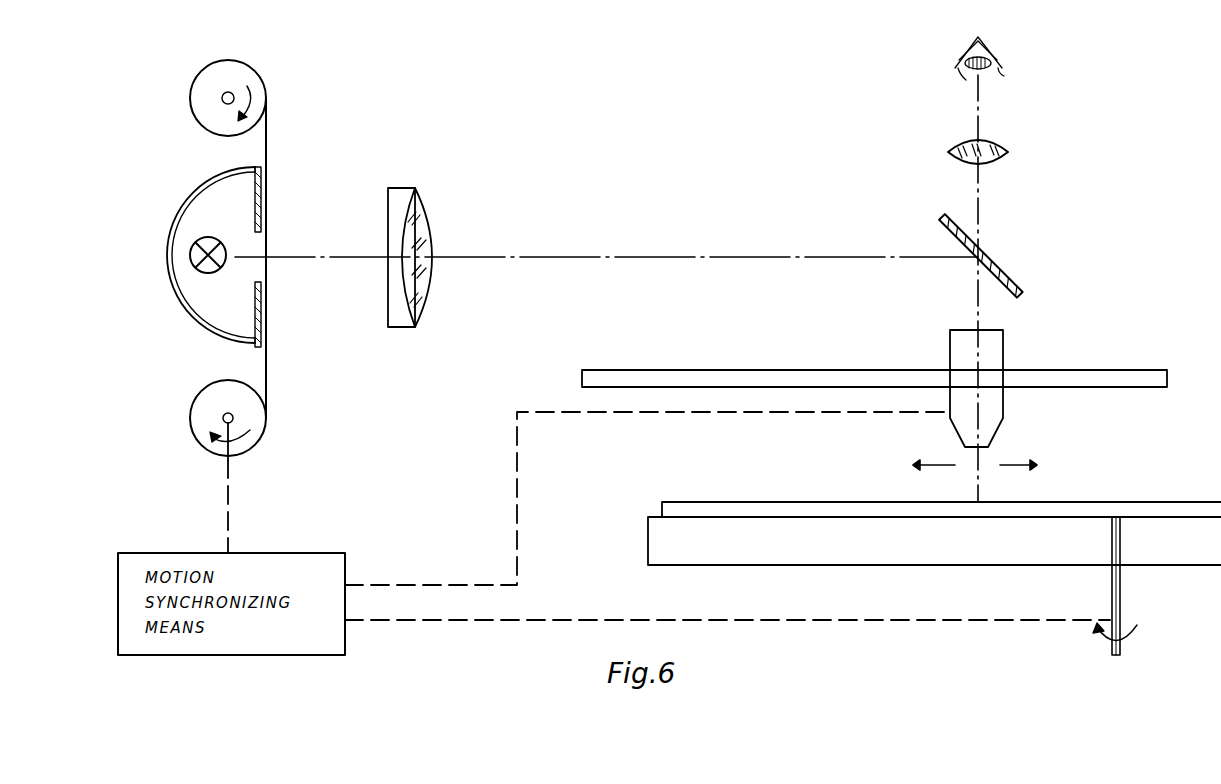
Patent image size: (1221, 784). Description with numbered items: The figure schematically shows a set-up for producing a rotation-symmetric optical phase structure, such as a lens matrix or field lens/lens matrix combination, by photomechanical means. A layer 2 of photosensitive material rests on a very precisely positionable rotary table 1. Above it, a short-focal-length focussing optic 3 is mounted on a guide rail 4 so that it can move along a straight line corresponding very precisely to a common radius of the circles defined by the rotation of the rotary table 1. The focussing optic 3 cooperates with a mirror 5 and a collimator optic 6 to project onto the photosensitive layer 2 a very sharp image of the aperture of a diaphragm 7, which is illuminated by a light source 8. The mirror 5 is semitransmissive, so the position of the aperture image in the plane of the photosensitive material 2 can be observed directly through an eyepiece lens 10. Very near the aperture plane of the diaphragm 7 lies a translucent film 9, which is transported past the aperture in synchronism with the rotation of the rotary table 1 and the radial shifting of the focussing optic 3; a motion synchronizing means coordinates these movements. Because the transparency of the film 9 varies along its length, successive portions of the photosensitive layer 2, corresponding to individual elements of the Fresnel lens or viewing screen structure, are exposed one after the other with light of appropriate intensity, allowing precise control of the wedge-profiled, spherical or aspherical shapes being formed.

The rotary table 1 is at (1178, 560).
The layer of photosensitive material 2 is at (1178, 507).
The focussing optic 3 is at (1003, 412).
The guide rail 4 is at (1155, 375).
The mirror 5 is at (986, 250).
The collimator optic 6 is at (403, 321).
The diaphragm 7 is at (246, 340).
The light source 8 is at (204, 272).
The translucent film 9 is at (268, 150).
The eyepiece lens 10 is at (1003, 145).